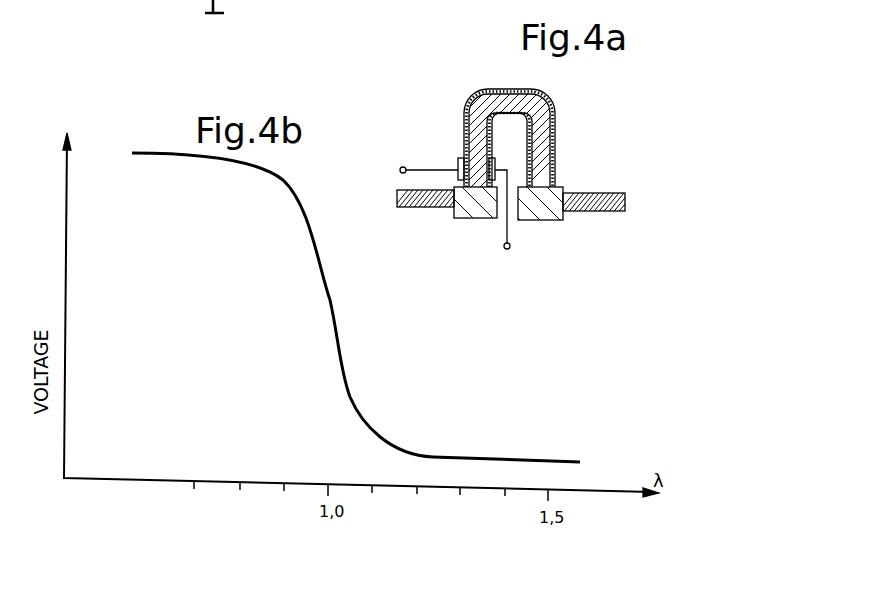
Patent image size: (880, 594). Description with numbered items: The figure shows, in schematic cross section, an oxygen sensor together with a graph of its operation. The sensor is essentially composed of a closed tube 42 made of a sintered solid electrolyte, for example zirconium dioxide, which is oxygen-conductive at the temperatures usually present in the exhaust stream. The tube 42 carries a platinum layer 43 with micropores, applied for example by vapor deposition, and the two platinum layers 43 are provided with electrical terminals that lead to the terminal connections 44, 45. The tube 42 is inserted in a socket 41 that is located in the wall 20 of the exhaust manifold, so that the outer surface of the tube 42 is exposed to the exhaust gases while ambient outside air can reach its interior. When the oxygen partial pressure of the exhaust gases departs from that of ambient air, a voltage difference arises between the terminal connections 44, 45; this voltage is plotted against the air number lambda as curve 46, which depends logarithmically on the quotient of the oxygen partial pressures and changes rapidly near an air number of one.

In FIG. 4A, the wall 20 is at (594, 212).
In FIG. 4A, the socket 41 is at (541, 220).
In FIG. 4A, the closed tube 42 is at (547, 125).
In FIG. 4A, the platinum layer 43 is at (491, 138).
In FIG. 4A, the terminal connection 44 is at (403, 167).
In FIG. 4A, the terminal connection 45 is at (508, 249).
In FIG. 4B, the curve 46 is at (342, 360).